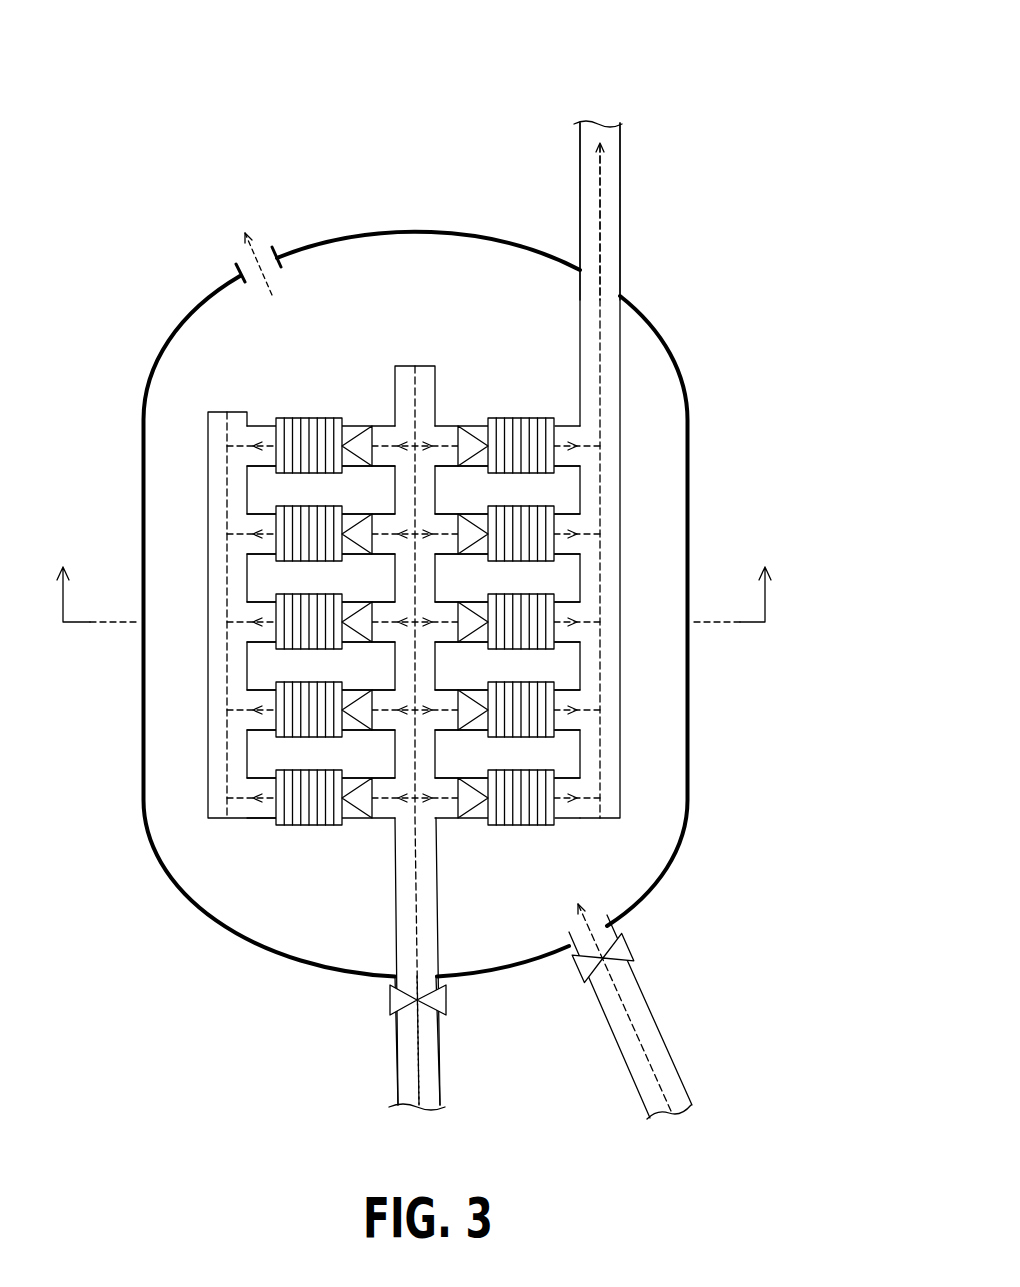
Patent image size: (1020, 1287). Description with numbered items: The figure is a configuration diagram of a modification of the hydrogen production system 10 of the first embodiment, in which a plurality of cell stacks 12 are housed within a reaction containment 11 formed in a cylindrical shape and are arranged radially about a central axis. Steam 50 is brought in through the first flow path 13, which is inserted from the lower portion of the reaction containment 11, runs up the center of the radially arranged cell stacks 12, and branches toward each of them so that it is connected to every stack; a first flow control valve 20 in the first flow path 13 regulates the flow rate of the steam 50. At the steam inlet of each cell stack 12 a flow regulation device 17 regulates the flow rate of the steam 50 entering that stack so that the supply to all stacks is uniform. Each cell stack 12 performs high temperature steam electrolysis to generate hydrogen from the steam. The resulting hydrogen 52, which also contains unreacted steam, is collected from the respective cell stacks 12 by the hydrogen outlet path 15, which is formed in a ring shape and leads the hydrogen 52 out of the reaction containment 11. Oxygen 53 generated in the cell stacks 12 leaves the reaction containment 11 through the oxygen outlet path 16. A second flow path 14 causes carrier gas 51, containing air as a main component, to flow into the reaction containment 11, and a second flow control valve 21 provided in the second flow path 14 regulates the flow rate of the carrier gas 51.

The hydrogen production system 10 is at (631, 75).
The reaction containment 11 is at (413, 229).
The cell stack 12 is at (301, 409).
The first flow path 13 is at (441, 1038).
The second flow path 14 is at (648, 1003).
The hydrogen outlet path 15 is at (622, 180).
The oxygen outlet path 16 is at (274, 252).
The flow regulation device 17 is at (352, 427).
The first flow control valve 20 is at (447, 999).
The second flow control valve 21 is at (630, 941).
The steam 50 is at (421, 1075).
The carrier gas 51 is at (659, 1070).
The hydrogen 52 is at (601, 223).
The oxygen 53 is at (274, 293).